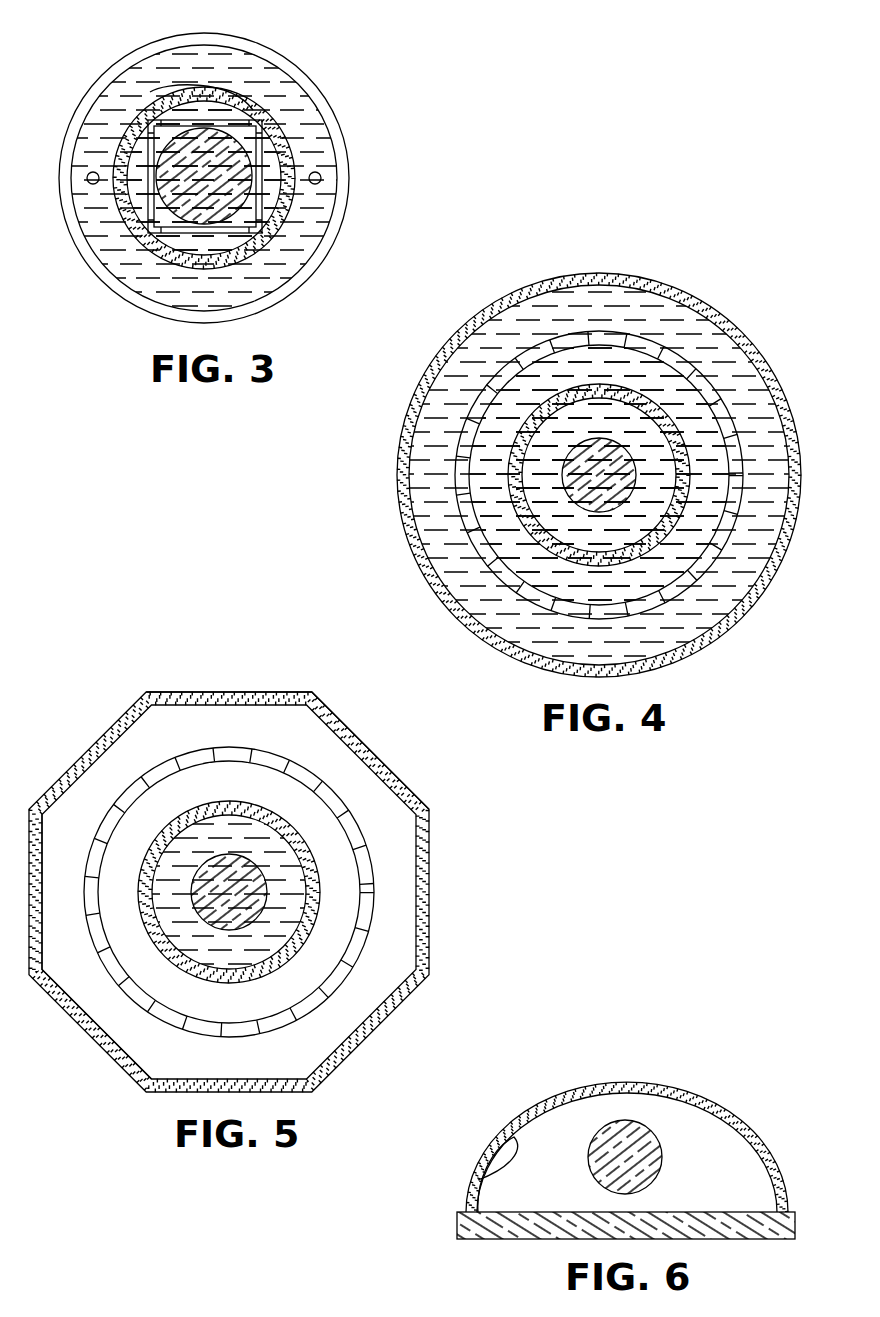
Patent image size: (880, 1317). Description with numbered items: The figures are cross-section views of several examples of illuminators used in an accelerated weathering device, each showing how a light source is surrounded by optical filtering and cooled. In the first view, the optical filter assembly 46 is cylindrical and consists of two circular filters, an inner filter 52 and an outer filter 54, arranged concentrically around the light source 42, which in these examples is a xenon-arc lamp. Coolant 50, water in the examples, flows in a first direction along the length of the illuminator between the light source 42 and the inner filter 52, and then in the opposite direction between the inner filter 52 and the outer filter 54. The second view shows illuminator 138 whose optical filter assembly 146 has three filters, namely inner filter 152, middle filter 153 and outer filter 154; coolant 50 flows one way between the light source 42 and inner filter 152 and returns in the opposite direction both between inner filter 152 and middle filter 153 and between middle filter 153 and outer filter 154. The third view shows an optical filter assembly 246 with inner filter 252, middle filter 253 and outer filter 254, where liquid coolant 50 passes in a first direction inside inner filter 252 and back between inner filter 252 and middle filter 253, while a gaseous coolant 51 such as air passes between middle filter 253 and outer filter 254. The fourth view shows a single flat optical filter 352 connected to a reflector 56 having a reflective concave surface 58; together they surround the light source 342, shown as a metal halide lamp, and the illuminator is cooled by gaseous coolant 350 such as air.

In FIG. 3, the light source 42 is at (170, 132).
In FIG. 4, the light source 42 is at (594, 430).
In FIG. 5, the light source 42 is at (211, 859).
In FIG. 3, the optical filter assembly 46 is at (208, 171).
In FIG. 3, the coolant 50 is at (125, 195).
In FIG. 4, the coolant 50 is at (538, 415).
In FIG. 5, the coolant 50 is at (164, 861).
In FIG. 5, the gaseous coolant 51 is at (111, 1049).
In FIG. 3, the inner filter 52 is at (285, 174).
In FIG. 3, the outer filter 54 is at (302, 265).
In FIG. 6, the reflector 56 is at (645, 1073).
In FIG. 6, the reflective concave surface 58 is at (477, 1164).
In FIG. 4, the illuminator 138 is at (568, 465).
In FIG. 5, the illuminator 138 is at (283, 865).
In FIG. 6, the illuminator 138 is at (620, 1156).
In FIG. 4, the optical filter assembly 146 is at (723, 627).
In FIG. 4, the inner filter 152 is at (501, 462).
In FIG. 4, the middle filter 153 is at (448, 502).
In FIG. 4, the outer filter 154 is at (458, 588).
In FIG. 5, the optical filter assembly 246 is at (428, 923).
In FIG. 5, the inner filter 252 is at (303, 926).
In FIG. 5, the middle filter 253 is at (307, 1003).
In FIG. 5, the outer filter 254 is at (374, 754).
In FIG. 6, the light source 342 is at (602, 1127).
In FIG. 6, the gaseous coolant 350 is at (694, 1137).
In FIG. 6, the optical filter 352 is at (517, 1227).